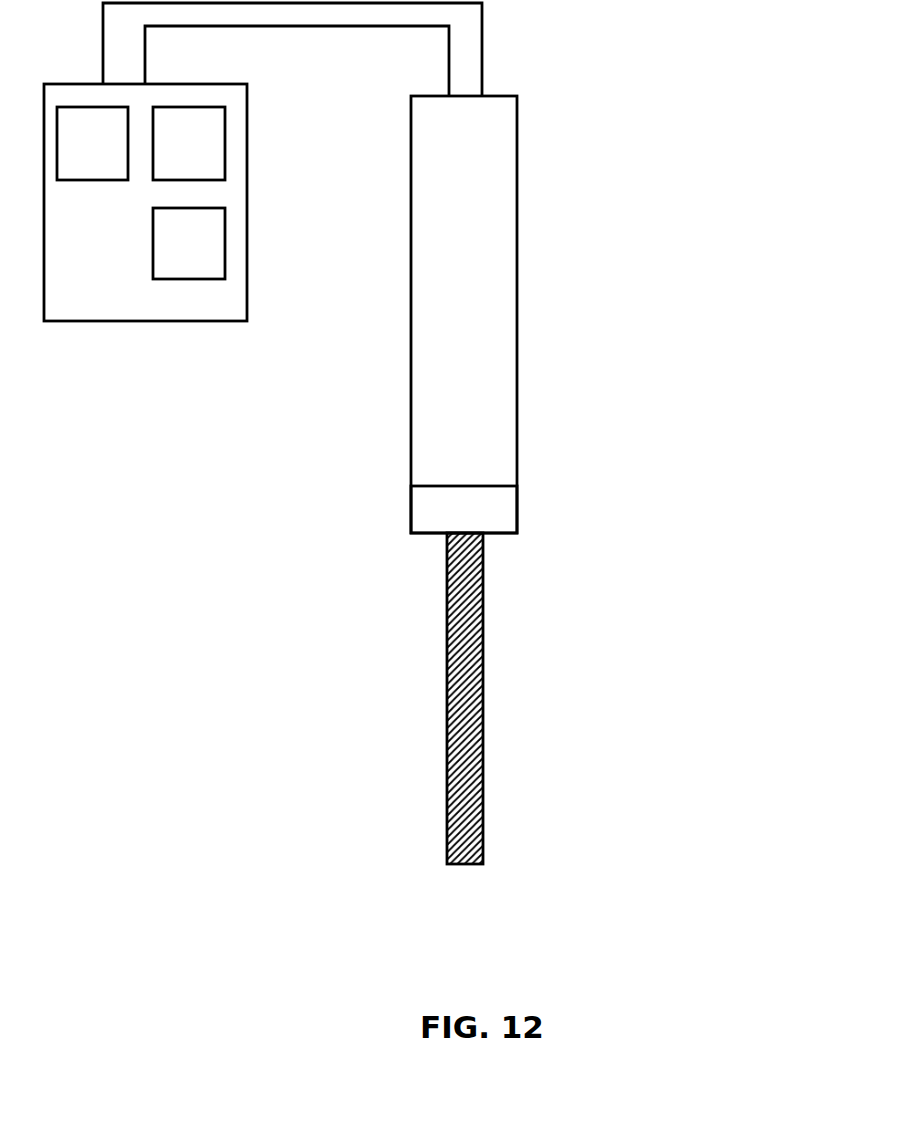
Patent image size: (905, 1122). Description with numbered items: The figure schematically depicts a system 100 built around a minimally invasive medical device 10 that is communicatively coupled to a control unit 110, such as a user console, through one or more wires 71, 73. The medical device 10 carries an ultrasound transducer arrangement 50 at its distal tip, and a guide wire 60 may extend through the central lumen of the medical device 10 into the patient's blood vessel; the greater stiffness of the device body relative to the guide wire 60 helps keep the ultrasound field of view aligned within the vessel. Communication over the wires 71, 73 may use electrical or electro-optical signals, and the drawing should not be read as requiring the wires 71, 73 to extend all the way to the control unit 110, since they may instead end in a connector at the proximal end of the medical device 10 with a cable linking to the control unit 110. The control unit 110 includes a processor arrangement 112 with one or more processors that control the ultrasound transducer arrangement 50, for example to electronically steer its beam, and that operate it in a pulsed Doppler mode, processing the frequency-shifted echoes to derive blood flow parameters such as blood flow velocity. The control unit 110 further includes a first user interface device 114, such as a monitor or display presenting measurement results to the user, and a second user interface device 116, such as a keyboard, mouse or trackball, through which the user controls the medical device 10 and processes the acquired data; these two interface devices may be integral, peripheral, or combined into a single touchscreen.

The system 100 is at (348, 481).
The medical device 10 is at (532, 314).
The ultrasound transducer arrangement 50 is at (500, 518).
The guide wire 60 is at (472, 690).
The wire 71 is at (483, 41).
The wire 73 is at (315, 27).
The control unit 110 is at (209, 253).
The processor arrangement 112 is at (106, 180).
The first user interface device 114 is at (222, 172).
The second user interface device 116 is at (222, 271).